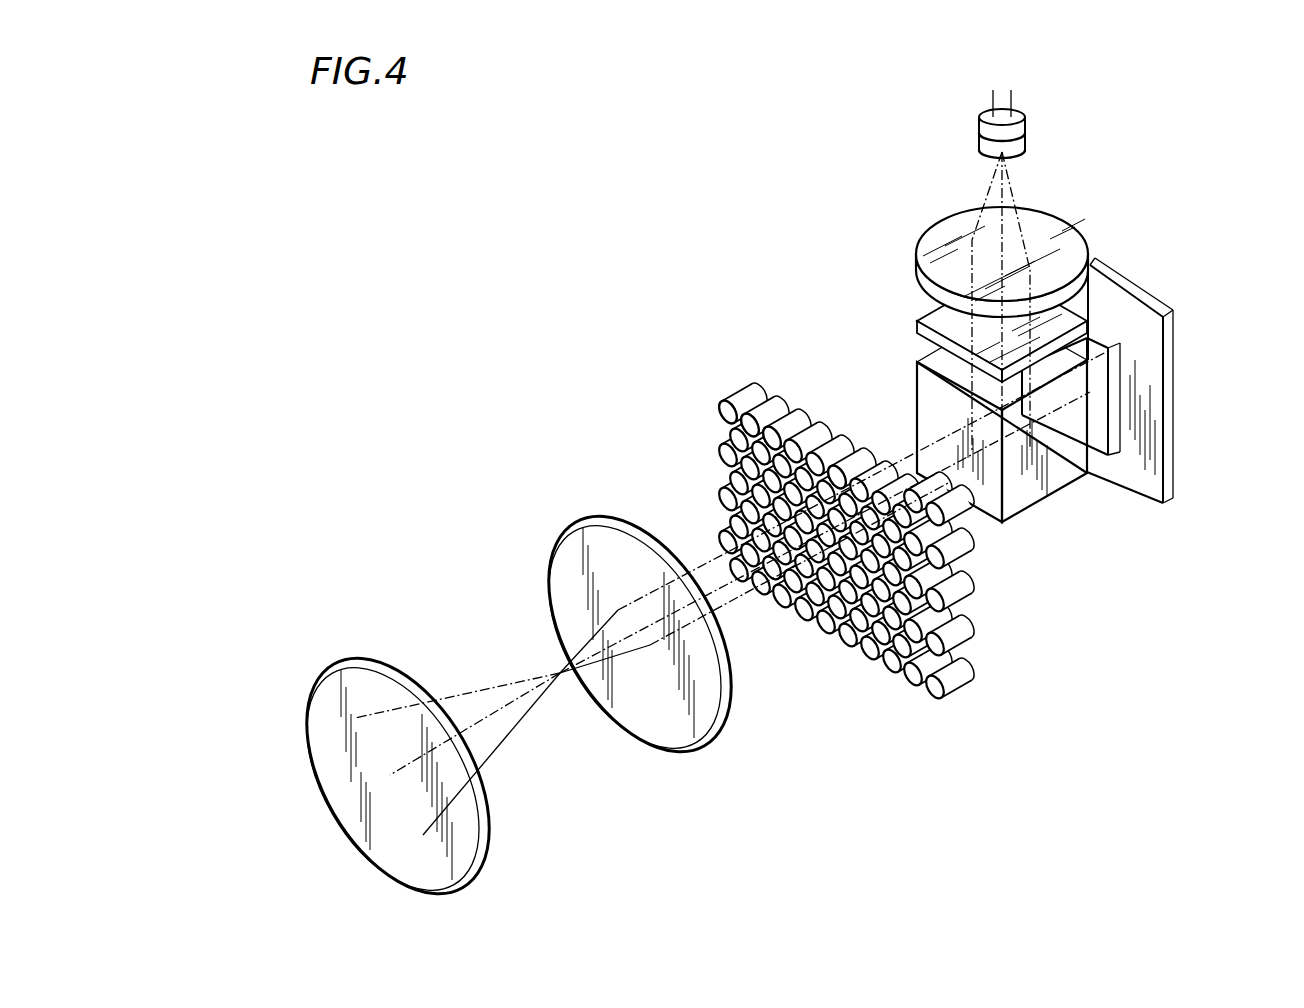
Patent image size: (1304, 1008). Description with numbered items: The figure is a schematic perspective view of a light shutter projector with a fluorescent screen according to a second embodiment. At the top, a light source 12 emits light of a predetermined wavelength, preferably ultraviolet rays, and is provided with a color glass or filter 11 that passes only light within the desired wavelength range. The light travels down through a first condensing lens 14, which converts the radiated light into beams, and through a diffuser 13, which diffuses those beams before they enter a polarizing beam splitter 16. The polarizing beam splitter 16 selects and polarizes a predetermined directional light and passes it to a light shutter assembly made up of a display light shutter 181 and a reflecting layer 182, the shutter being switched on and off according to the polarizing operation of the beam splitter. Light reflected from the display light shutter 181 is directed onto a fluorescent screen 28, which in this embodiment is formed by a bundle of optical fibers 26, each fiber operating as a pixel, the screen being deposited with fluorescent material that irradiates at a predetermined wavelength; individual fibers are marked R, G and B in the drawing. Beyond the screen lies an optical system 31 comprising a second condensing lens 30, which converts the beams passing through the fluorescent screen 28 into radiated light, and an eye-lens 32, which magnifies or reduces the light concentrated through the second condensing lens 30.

The filter 11 is at (980, 141).
The light source 12 is at (1027, 122).
The diffuser 13 is at (917, 325).
The first condensing lens 14 is at (1060, 234).
The polarizing beam splitter 16 is at (1033, 494).
The display light shutter 181 is at (1107, 340).
The reflecting layer 182 is at (1170, 430).
The optical fiber 26 is at (837, 442).
The fluorescent screen 28 is at (706, 445).
The red microlens R is at (730, 412).
The green microlens G is at (752, 425).
The blue microlens B is at (772, 437).
The second condensing lens 30 is at (712, 723).
The optical system 31 is at (640, 848).
The eye-lens 32 is at (463, 860).